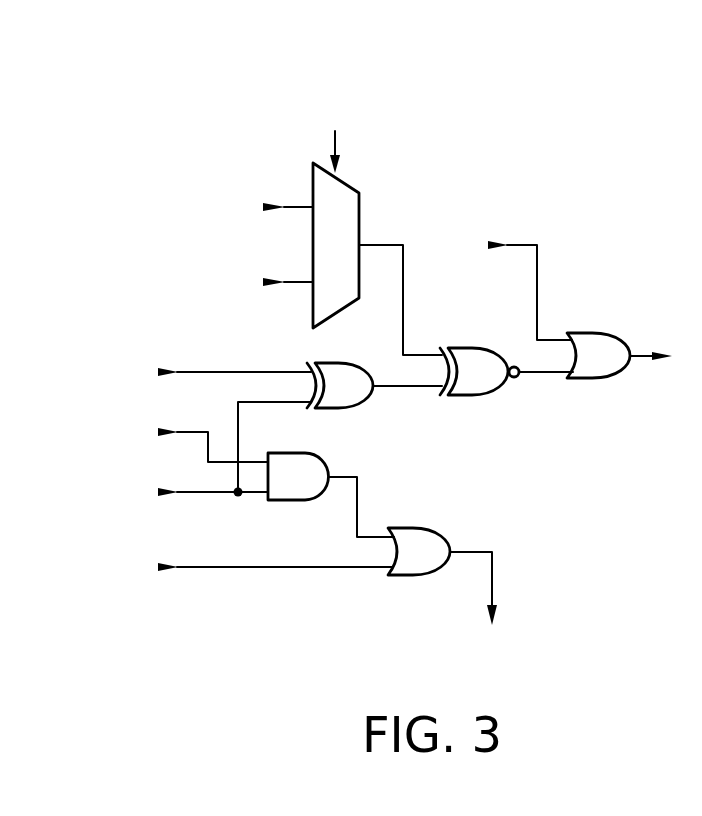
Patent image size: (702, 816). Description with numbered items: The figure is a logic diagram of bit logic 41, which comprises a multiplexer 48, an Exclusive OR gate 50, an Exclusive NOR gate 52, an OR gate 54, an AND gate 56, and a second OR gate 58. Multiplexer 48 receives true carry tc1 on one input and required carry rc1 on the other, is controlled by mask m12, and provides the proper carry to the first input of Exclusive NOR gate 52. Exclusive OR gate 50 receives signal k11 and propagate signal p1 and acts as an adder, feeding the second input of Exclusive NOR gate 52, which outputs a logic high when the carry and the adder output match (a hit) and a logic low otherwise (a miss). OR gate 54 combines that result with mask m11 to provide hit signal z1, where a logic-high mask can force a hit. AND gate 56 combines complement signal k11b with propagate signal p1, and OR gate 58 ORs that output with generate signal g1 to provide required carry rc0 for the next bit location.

The bit logic 41 is at (184, 132).
The multiplexer 48 is at (360, 210).
The Exclusive OR gate 50 is at (337, 410).
The Exclusive NOR gate 52 is at (478, 348).
The OR gate 54 is at (595, 333).
The AND gate 56 is at (283, 501).
The OR gate 58 is at (418, 528).